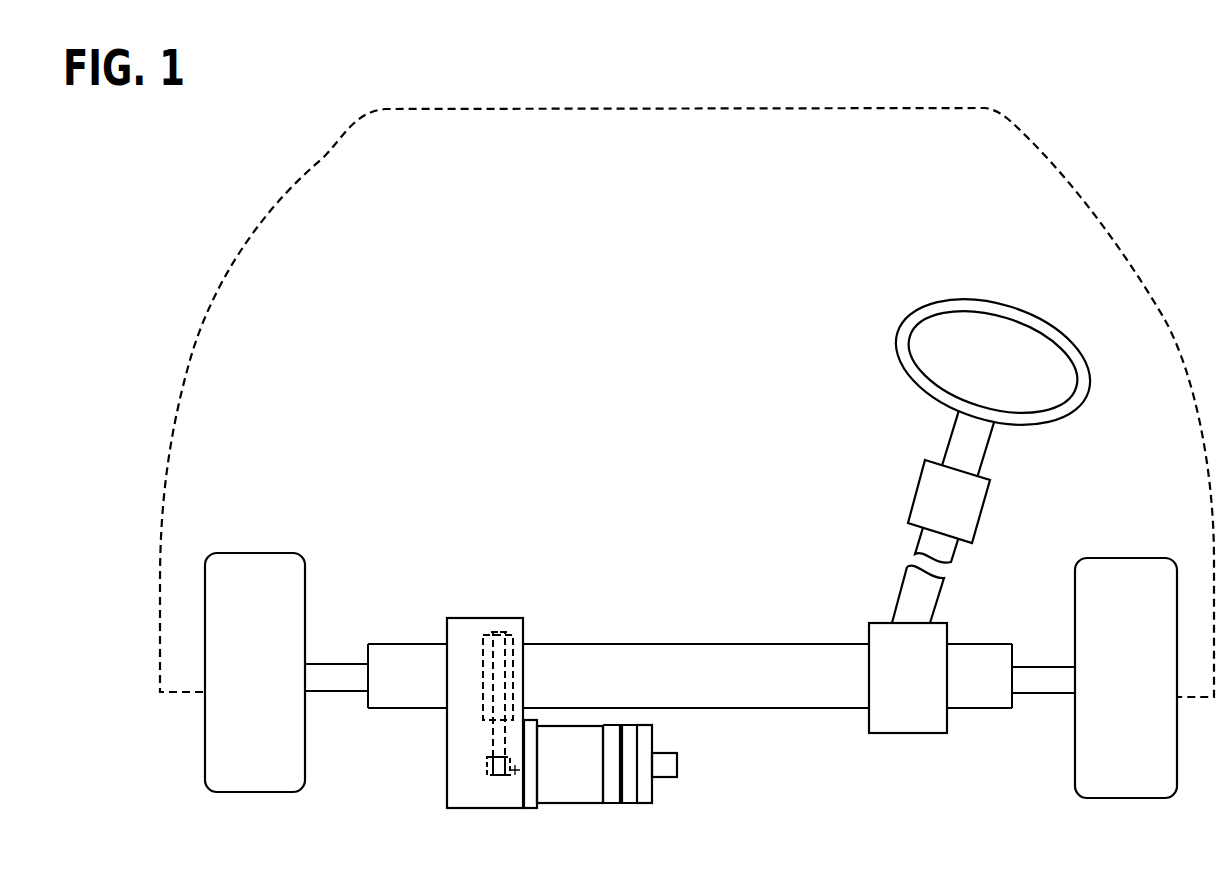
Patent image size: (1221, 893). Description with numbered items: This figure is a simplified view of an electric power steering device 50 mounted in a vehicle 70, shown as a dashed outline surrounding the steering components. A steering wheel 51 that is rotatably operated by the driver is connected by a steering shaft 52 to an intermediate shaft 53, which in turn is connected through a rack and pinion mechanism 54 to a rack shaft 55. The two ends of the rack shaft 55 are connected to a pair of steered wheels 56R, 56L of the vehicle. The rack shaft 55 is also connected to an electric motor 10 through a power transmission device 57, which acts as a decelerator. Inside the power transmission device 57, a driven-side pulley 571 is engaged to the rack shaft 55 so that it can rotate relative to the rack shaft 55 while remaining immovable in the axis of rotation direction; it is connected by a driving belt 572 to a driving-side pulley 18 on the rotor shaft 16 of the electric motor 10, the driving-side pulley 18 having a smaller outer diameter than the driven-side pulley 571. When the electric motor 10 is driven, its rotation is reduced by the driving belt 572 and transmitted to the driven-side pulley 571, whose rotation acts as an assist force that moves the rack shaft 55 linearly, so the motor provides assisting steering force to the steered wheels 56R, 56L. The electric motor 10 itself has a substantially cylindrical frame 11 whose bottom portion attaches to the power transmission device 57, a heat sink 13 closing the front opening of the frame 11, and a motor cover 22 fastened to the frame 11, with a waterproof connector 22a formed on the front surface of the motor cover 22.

The electric motor 10 is at (653, 790).
The frame 11 is at (610, 793).
The heat sink 13 is at (627, 800).
The rotor shaft 16 is at (517, 777).
The driving-side pulley 18 is at (487, 773).
The motor cover 22 is at (647, 800).
The waterproof connector 22a is at (677, 765).
The electric power steering device 50 is at (620, 428).
The steering wheel 51 is at (907, 321).
The steering shaft 52 is at (943, 443).
The intermediate shaft 53 is at (897, 595).
The rack and pinion mechanism 54 is at (928, 728).
The rack shaft 55 is at (663, 643).
The steered wheel 56L is at (257, 556).
The steered wheel 56R is at (1127, 562).
The power transmission device 57 is at (487, 618).
The driven-side pulley 571 is at (517, 641).
The driving belt 572 is at (490, 672).
The vehicle 70 is at (287, 178).